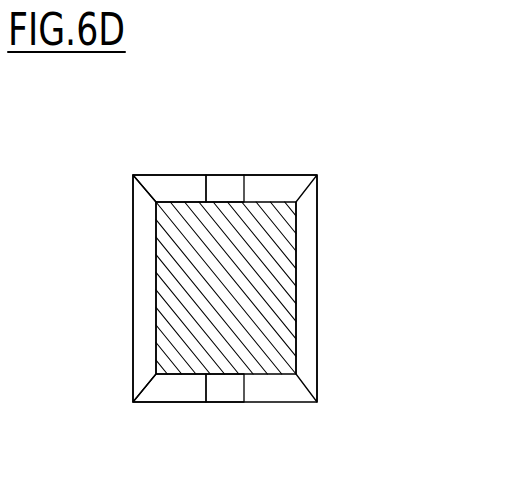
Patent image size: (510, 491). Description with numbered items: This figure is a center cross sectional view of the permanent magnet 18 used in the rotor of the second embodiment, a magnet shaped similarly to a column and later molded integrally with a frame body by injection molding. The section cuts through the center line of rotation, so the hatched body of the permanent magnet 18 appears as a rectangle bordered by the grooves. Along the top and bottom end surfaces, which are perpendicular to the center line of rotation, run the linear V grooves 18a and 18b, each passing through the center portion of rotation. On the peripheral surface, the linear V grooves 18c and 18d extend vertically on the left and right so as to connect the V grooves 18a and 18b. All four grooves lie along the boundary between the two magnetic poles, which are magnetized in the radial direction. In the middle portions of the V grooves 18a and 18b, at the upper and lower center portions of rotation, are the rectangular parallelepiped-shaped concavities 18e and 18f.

The permanent magnet 18 is at (296, 153).
The linear V groove 18a is at (173, 178).
The linear V groove 18b is at (175, 390).
The linear V groove 18c is at (142, 320).
The linear V groove 18d is at (307, 288).
The rectangular parallelepiped-shaped concavity 18e is at (225, 183).
The rectangular parallelepiped-shaped concavity 18f is at (227, 385).